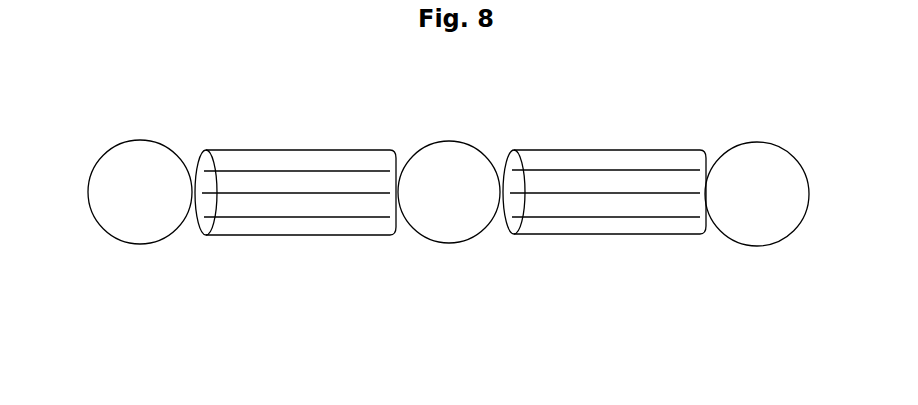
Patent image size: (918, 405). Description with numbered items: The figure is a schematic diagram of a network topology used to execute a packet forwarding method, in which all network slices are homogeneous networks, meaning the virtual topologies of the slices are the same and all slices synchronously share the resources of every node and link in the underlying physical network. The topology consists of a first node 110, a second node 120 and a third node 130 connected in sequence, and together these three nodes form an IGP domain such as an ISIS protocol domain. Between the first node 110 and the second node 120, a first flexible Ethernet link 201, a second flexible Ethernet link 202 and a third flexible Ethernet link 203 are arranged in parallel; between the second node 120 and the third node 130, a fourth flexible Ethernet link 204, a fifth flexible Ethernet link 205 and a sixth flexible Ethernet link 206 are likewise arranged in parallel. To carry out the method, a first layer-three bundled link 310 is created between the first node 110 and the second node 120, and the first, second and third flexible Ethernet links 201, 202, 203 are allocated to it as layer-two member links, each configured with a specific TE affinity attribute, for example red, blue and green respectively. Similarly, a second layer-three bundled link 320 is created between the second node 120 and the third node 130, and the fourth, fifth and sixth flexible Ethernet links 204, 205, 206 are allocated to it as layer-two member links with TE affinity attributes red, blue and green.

The first node 110 is at (128, 140).
The second node 120 is at (468, 142).
The third node 130 is at (766, 143).
The first layer-3 bundled link 310 is at (333, 150).
The second layer-3 bundled link 320 is at (650, 150).
The first flexible Ethernet link 201 is at (297, 165).
The second flexible Ethernet link 202 is at (296, 187).
The third flexible Ethernet link 203 is at (297, 208).
The fourth flexible Ethernet link 204 is at (606, 163).
The fifth flexible Ethernet link 205 is at (605, 187).
The sixth flexible Ethernet link 206 is at (606, 209).